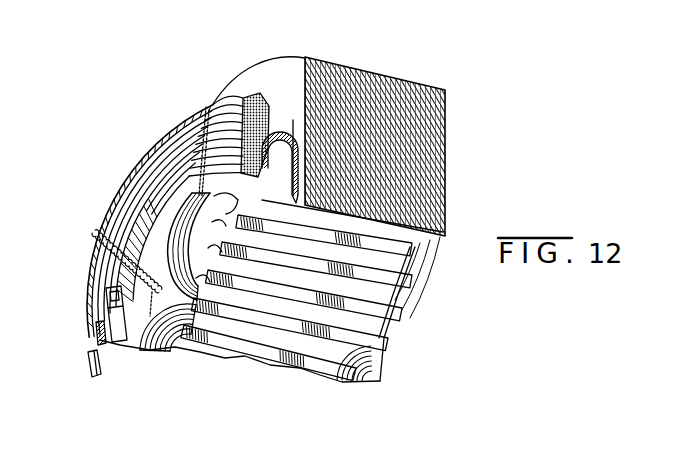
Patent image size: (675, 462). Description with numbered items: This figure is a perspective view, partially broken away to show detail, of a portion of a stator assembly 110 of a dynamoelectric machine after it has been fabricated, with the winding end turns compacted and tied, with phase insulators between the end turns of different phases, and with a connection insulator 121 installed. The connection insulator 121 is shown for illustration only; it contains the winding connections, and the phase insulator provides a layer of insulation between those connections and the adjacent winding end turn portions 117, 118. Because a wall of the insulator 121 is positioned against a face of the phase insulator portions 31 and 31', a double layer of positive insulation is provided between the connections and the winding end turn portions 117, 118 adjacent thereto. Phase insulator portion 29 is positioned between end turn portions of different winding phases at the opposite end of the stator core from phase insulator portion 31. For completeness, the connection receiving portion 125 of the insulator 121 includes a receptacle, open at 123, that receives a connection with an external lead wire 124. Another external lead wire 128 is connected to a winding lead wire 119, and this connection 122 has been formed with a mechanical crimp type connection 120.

The stator assembly 110 is at (373, 67).
The winding end turn portion 117 is at (262, 102).
The winding end turn portion 118 is at (265, 152).
The external lead wire 124 is at (153, 213).
The receptacle opening 123 is at (133, 223).
The connection receiving portion 125 is at (121, 218).
The connection insulator 121 is at (107, 218).
The phase insulator portion 31 is at (105, 261).
The connection 122 is at (97, 339).
The external lead wire 128 is at (88, 375).
The mechanical crimp type connection 120 is at (106, 343).
The winding lead wire 119 is at (103, 345).
The phase insulator portion 31' is at (168, 370).
The phase insulator portion 29 is at (377, 358).